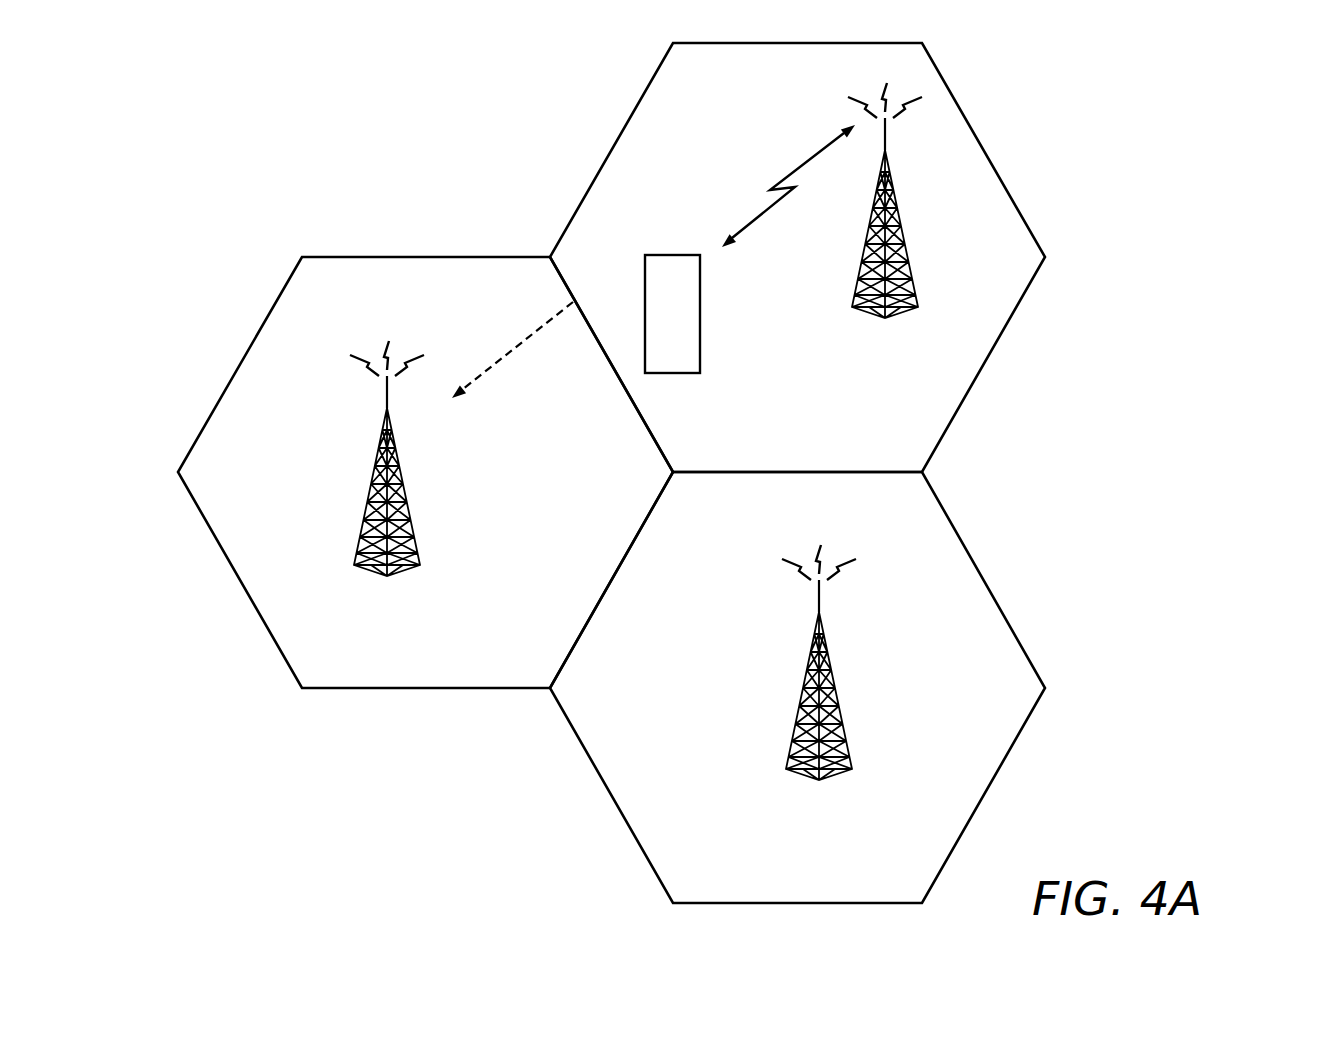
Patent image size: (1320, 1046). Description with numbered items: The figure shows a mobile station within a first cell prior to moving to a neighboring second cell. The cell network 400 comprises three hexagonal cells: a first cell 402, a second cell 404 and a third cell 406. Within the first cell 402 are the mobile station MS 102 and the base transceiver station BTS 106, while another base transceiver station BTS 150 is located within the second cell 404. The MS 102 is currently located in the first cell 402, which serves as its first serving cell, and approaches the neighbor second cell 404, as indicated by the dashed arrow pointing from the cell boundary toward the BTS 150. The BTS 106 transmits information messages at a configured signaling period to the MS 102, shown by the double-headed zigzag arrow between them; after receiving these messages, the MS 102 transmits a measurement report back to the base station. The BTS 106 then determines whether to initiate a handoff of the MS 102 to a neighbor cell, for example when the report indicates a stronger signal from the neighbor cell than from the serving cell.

The cell network 400 is at (1212, 82).
The first cell 402 is at (983, 147).
The second cell 404 is at (333, 256).
The third cell 406 is at (948, 517).
The base transceiver station 106 is at (909, 276).
The base transceiver station 150 is at (363, 523).
The mobile station 102 is at (700, 329).